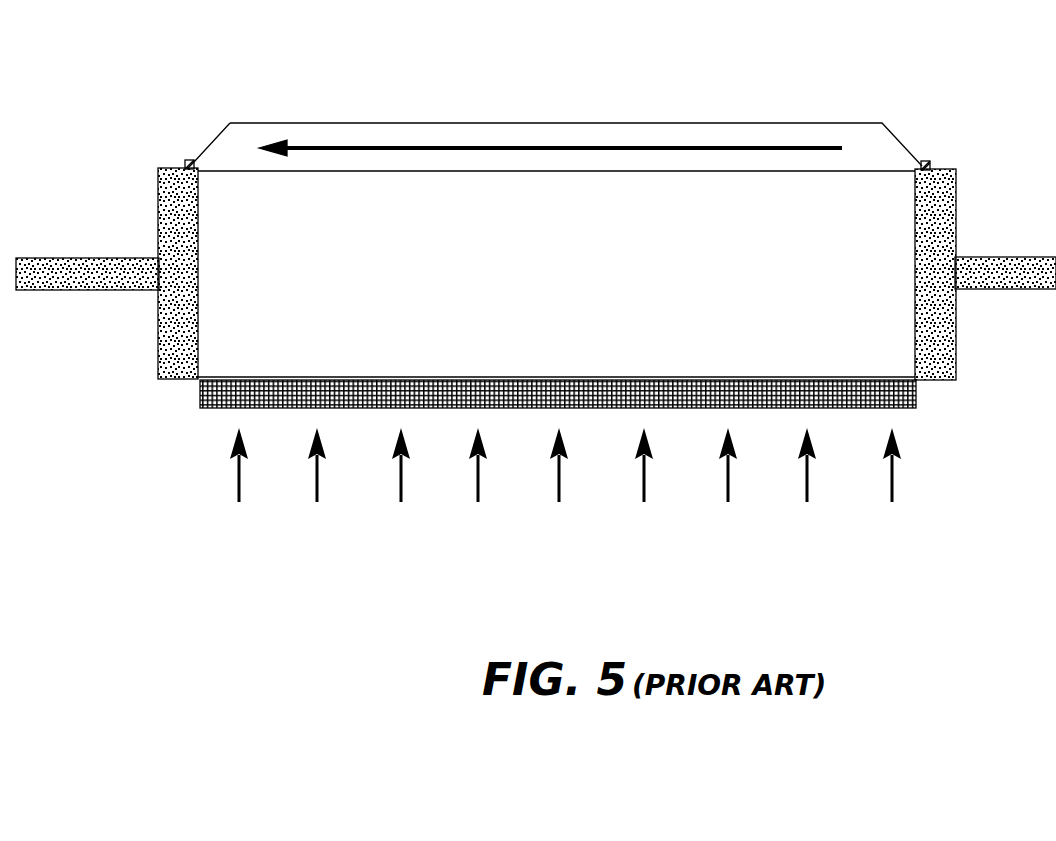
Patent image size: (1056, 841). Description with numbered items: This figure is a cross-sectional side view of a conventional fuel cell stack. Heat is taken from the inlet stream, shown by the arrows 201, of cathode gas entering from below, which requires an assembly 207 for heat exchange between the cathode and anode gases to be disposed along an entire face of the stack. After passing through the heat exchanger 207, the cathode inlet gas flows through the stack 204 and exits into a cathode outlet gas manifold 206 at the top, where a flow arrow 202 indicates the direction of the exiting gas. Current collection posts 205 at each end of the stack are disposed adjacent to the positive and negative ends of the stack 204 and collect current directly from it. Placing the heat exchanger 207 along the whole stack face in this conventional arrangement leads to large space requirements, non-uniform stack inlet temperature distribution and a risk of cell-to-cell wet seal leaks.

The inlet stream arrows 201 is at (646, 483).
The process gas flow 202 is at (693, 148).
The stack 204 is at (858, 215).
The current collection posts 205 is at (176, 218).
The cathode outlet gas manifold 206 is at (236, 146).
The heat exchanger assembly 207 is at (218, 397).